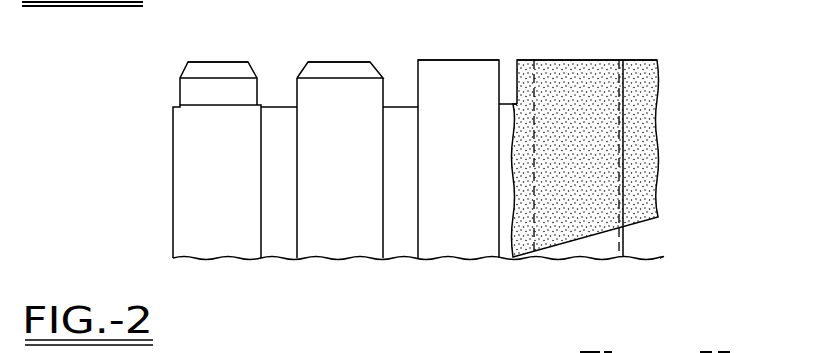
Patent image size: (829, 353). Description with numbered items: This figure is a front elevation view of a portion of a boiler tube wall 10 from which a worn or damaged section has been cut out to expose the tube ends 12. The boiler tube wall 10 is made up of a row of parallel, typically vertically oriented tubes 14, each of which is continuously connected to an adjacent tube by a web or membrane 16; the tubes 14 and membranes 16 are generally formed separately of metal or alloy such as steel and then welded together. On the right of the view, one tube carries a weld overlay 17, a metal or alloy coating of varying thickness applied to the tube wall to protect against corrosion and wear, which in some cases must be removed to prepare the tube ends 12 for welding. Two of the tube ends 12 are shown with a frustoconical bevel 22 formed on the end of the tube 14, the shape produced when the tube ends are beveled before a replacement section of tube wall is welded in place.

The boiler tube wall 10 is at (142, 114).
The tube ends 12 is at (210, 62).
The tubes 14 is at (303, 255).
The membrane 16 is at (398, 255).
The weld overlay 17 is at (650, 122).
The frustoconical bevel 22 is at (183, 70).